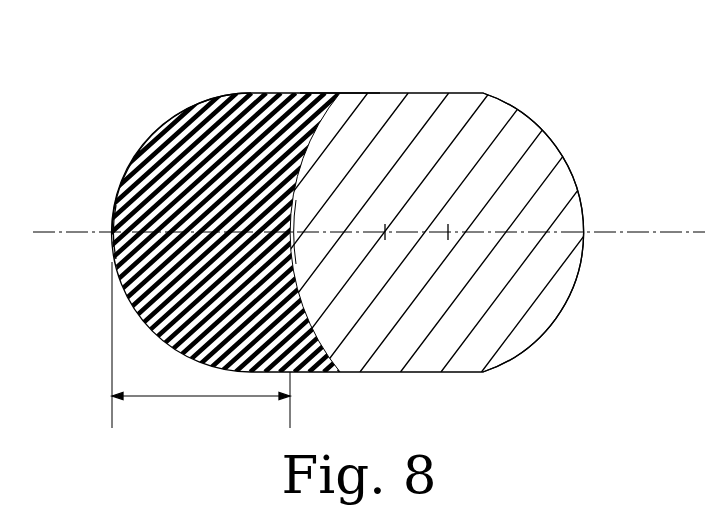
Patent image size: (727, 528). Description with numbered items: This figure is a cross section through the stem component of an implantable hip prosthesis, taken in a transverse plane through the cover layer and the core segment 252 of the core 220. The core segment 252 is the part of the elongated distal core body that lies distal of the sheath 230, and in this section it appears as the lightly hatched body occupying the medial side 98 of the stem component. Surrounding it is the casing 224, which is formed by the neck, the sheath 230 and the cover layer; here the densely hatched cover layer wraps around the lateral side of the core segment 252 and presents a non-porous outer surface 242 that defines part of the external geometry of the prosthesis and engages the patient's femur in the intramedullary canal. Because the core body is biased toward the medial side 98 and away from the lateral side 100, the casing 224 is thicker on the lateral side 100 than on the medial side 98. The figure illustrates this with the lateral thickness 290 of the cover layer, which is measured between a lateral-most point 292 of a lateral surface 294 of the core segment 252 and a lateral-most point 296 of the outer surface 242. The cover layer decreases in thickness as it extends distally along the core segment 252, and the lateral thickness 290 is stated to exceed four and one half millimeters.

The lateral side 100 is at (113, 127).
The medial side 98 is at (592, 150).
The core 220 is at (399, 92).
The casing 224 is at (222, 97).
The sheath 230 is at (175, 121).
The outer surface 242 is at (129, 170).
The core segment 252 is at (483, 117).
The lateral thickness 290 is at (200, 398).
The lateral-most point 292 is at (291, 231).
The lateral surface 294 is at (313, 93).
The lateral-most point 296 is at (112, 232).